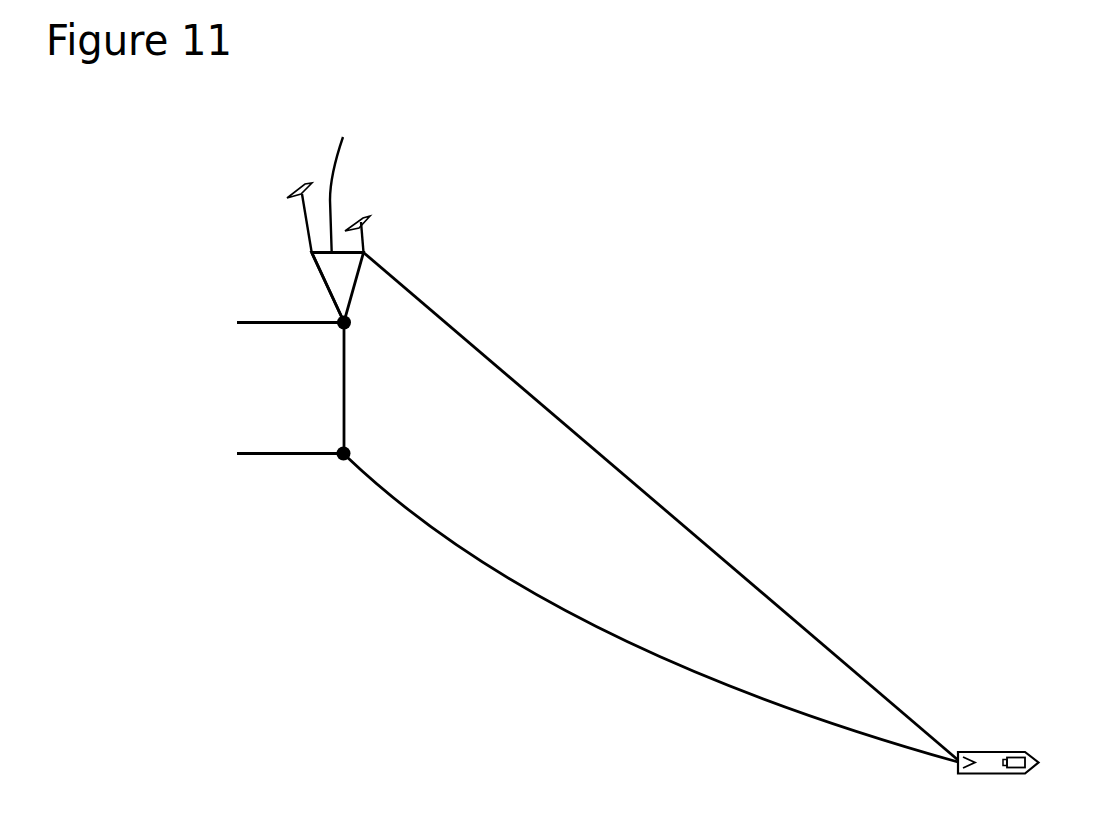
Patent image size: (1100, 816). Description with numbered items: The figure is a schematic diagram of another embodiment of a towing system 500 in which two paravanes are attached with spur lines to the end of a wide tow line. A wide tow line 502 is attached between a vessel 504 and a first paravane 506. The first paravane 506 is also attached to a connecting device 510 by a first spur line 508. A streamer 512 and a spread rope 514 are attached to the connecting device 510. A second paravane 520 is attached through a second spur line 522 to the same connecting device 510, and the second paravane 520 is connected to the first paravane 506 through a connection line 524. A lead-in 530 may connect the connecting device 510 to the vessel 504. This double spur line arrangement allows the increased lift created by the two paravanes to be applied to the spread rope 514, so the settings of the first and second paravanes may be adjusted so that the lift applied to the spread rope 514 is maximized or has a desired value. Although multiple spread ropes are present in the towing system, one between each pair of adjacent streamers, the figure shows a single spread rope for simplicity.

The towing system 500 is at (678, 217).
The wide tow line 502 is at (528, 390).
The vessel 504 is at (1003, 752).
The first paravane 506 is at (361, 216).
The first spur line 508 is at (353, 290).
The connecting device 510 is at (350, 324).
The streamer 512 is at (273, 321).
The spread rope 514 is at (343, 397).
The second paravane 520 is at (299, 187).
The second spur line 522 is at (323, 282).
The connection line 524 is at (352, 177).
The lead-in 530 is at (470, 555).